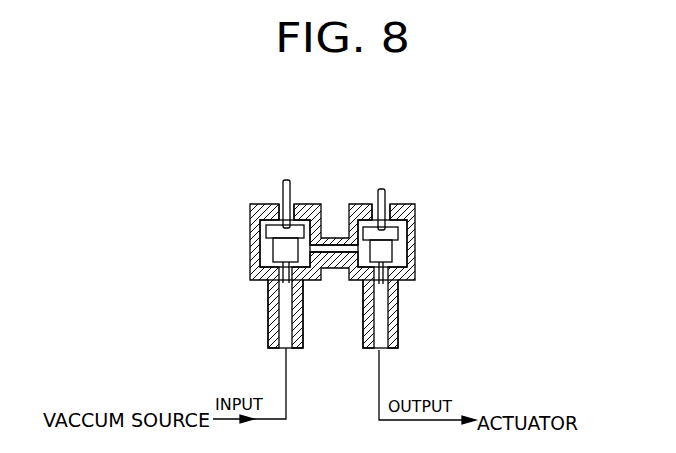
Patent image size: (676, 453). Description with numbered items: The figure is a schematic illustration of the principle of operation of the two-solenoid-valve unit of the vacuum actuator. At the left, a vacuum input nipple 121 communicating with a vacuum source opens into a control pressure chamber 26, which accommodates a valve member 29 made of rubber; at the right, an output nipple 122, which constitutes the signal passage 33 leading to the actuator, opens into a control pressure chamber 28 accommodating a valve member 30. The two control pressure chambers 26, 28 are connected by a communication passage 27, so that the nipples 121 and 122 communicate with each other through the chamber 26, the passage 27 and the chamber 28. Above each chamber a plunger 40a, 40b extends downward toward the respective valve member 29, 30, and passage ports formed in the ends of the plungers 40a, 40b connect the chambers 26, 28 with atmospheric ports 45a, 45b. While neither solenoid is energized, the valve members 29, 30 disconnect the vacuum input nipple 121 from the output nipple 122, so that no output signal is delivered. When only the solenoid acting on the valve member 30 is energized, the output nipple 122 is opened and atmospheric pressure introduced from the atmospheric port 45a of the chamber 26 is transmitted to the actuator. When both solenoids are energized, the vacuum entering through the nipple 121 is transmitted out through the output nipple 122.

The control pressure chamber 26 is at (262, 250).
The communication passage 27 is at (332, 247).
The control pressure chamber 28 is at (405, 249).
The valve member 29 is at (266, 231).
The valve member 30 is at (400, 229).
The signal passage 33 is at (385, 282).
The plunger 40a is at (287, 181).
The plunger 40b is at (382, 190).
The atmospheric port 45a is at (280, 203).
The atmospheric port 45b is at (391, 203).
The vacuum input nipple 121 is at (268, 337).
The output nipple 122 is at (398, 318).